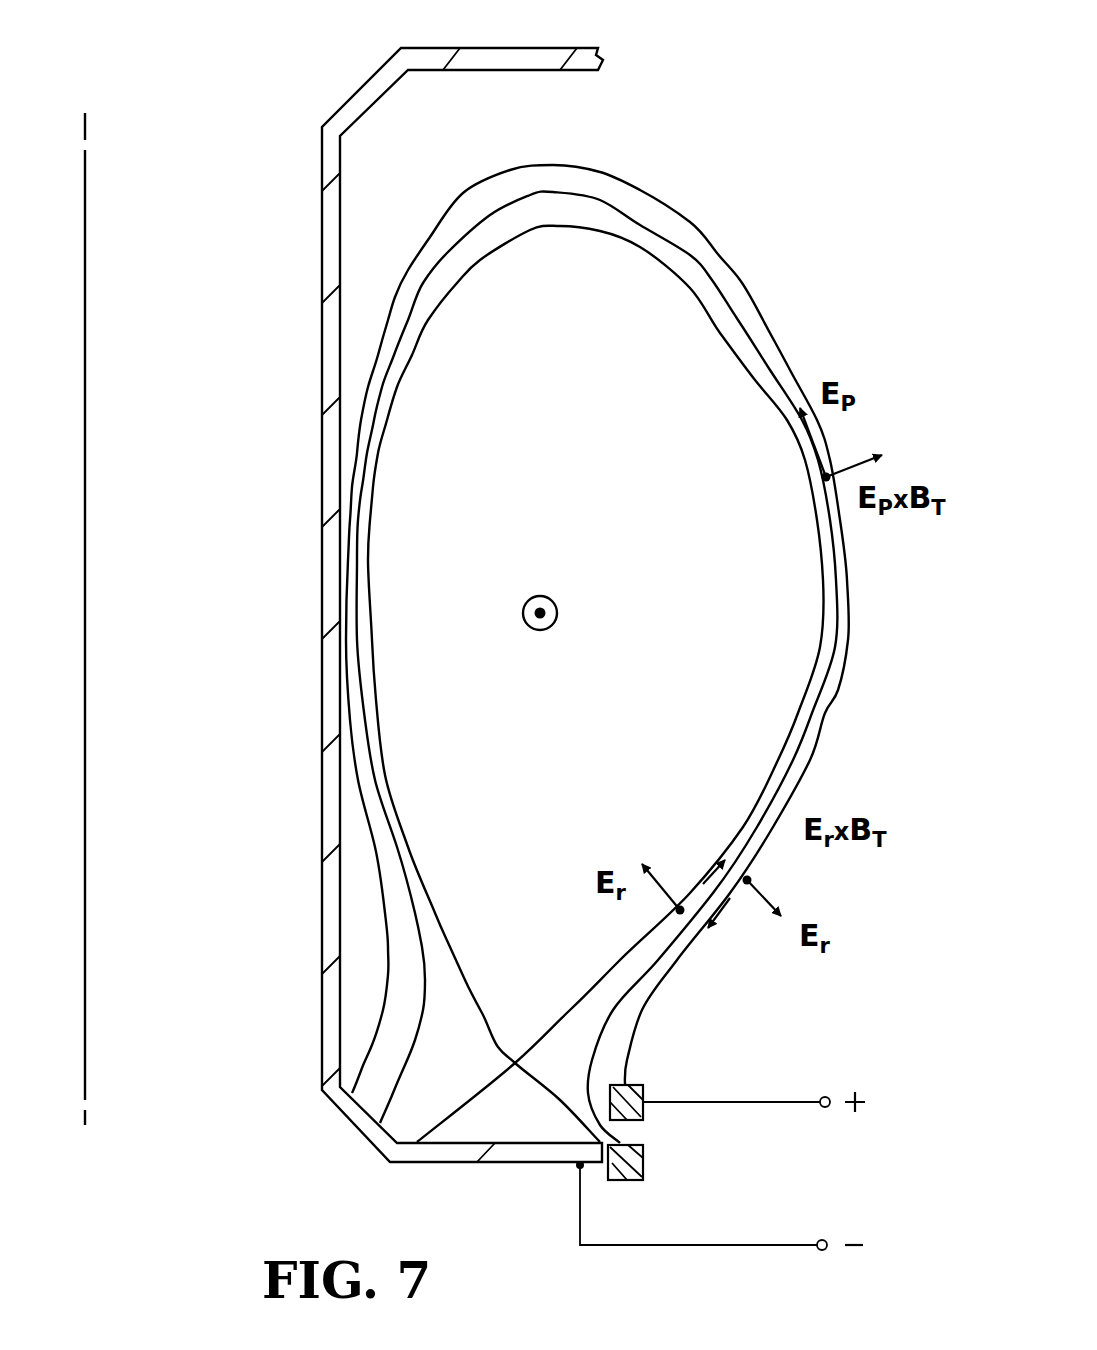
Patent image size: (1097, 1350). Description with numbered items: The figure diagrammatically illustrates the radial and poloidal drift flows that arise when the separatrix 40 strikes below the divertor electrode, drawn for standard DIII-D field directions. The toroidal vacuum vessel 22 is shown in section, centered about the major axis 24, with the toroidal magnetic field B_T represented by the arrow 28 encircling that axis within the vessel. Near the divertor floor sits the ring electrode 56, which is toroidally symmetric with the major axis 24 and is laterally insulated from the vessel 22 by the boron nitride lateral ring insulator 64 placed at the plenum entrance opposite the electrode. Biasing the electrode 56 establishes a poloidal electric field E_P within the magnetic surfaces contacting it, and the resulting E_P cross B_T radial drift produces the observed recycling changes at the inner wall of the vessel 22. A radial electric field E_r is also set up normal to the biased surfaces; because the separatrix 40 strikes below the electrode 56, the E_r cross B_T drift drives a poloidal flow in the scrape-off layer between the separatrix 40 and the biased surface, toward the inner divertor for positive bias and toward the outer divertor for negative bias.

The toroidal vacuum vessel 22 is at (322, 398).
The major axis 24 is at (85, 243).
The arrow representing toroidal magnetic field B_T 28 is at (545, 596).
The separatrix 40 is at (458, 975).
The ring electrode 56 is at (645, 1088).
The lateral ring insulator 64 is at (643, 1165).